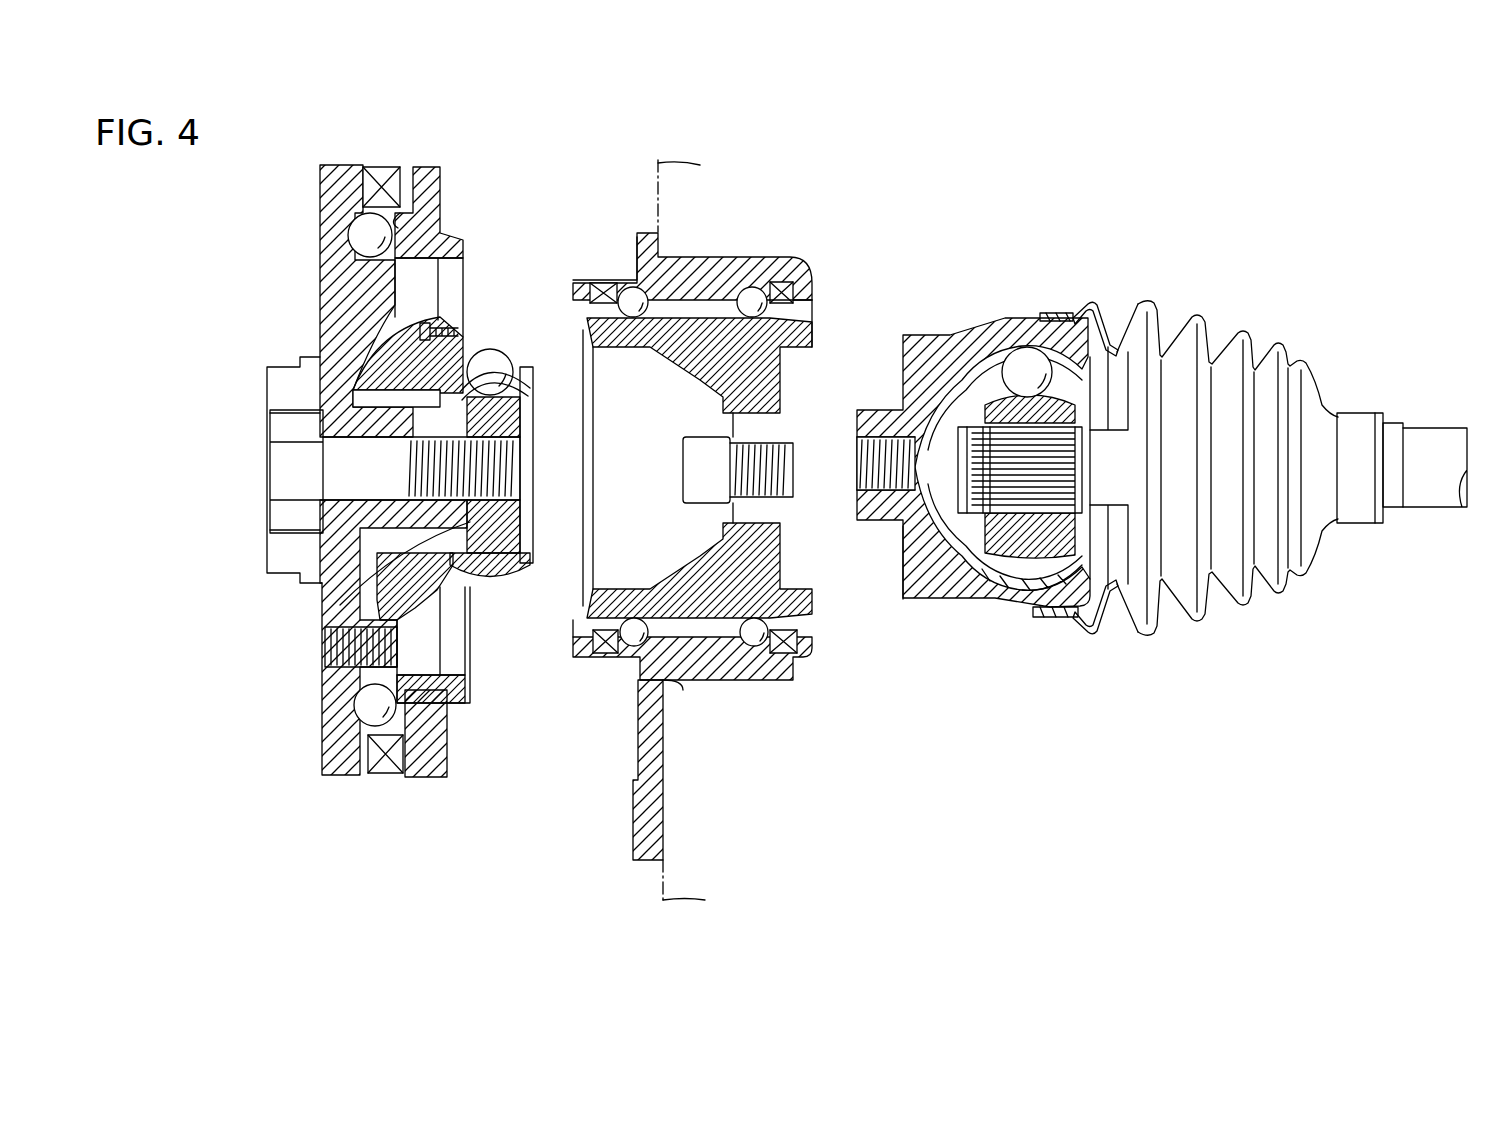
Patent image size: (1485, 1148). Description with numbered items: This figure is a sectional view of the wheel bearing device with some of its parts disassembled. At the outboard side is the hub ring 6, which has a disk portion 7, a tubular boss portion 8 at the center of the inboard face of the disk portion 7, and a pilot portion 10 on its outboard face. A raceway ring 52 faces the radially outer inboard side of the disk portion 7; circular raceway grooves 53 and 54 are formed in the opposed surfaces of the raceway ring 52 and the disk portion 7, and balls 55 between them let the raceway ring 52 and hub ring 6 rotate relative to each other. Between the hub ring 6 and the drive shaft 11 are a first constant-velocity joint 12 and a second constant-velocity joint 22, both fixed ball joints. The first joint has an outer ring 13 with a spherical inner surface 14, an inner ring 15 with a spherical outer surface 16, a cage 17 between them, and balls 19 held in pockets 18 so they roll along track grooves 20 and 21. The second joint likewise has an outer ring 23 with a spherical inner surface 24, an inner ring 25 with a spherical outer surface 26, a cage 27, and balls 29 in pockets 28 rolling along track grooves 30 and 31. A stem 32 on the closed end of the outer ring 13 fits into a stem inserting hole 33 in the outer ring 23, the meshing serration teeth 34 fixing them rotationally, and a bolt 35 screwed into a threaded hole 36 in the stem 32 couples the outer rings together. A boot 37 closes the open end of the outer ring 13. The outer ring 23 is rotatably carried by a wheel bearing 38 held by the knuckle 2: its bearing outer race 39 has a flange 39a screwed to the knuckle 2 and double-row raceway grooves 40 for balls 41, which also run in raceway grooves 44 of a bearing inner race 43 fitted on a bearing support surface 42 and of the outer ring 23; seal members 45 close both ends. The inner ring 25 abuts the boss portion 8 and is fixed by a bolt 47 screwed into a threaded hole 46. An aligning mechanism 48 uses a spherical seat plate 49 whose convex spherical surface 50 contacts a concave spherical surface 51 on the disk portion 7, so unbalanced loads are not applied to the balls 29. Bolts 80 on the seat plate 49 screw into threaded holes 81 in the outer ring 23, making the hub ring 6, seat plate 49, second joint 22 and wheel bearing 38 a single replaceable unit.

The knuckle 2 is at (650, 162).
The hub ring 6 is at (387, 437).
The disk portion 7 is at (344, 180).
The boss portion 8 is at (340, 352).
The pilot portion 10 is at (270, 370).
The drive shaft 11 is at (1422, 430).
The first constant-velocity joint 12 is at (1140, 448).
The outer ring 13 is at (1030, 315).
The spherical inner surface 14 is at (960, 575).
The inner ring 15 is at (1010, 575).
The spherical outer surface 16 is at (1025, 582).
The cage 17 is at (1063, 618).
The pockets 18 is at (1040, 345).
The balls 19 is at (1015, 345).
The track grooves 20 is at (1100, 330).
The track grooves 21 is at (1005, 370).
The second constant-velocity joint 22 is at (703, 617).
The outer ring 23 is at (692, 672).
The spherical inner surface 24 is at (575, 608).
The inner ring 25 is at (505, 572).
The spherical outer surface 26 is at (485, 592).
The cage 27 is at (533, 375).
The pockets 28 is at (515, 368).
The balls 29 is at (489, 349).
The track grooves 30 is at (650, 360).
The track grooves 31 is at (490, 412).
The stem 32 is at (882, 412).
The stem inserting hole 33 is at (770, 420).
The serration teeth 34 is at (790, 505).
The bolt 35 is at (690, 457).
The threaded hole 36 is at (870, 446).
The boot 37 is at (1250, 330).
The wheel bearing 38 is at (688, 255).
The bearing outer race 39 is at (720, 260).
The flange 39a is at (635, 818).
The raceway grooves 40 is at (632, 298).
The balls 41 is at (598, 288).
The bearing support surface 42 is at (800, 332).
The bearing inner race 43 is at (795, 312).
The raceway groove 44 is at (632, 618).
The seal members 45 is at (602, 655).
The threaded hole 46 is at (495, 445).
The bolt 47 is at (330, 457).
The aligning mechanism 48 is at (375, 345).
The spherical seat plate 49 is at (368, 593).
The convex spherical surface 50 is at (355, 625).
The concave spherical surface 51 is at (440, 638).
The raceway ring 52 is at (428, 167).
The raceway groove 53 is at (405, 228).
The raceway groove 54 is at (350, 240).
The balls 55 is at (356, 230).
The bolts 80 is at (450, 322).
The threaded holes 81 is at (575, 316).